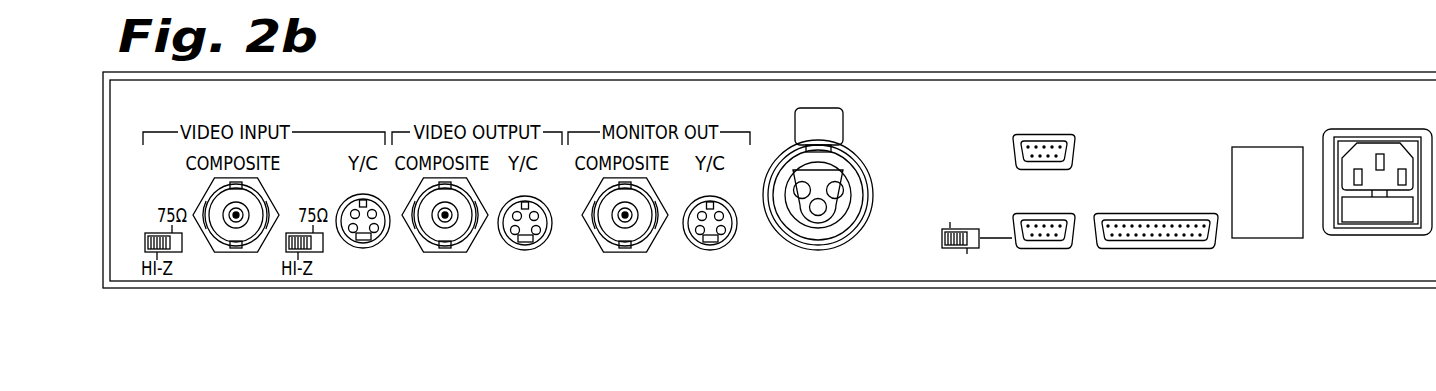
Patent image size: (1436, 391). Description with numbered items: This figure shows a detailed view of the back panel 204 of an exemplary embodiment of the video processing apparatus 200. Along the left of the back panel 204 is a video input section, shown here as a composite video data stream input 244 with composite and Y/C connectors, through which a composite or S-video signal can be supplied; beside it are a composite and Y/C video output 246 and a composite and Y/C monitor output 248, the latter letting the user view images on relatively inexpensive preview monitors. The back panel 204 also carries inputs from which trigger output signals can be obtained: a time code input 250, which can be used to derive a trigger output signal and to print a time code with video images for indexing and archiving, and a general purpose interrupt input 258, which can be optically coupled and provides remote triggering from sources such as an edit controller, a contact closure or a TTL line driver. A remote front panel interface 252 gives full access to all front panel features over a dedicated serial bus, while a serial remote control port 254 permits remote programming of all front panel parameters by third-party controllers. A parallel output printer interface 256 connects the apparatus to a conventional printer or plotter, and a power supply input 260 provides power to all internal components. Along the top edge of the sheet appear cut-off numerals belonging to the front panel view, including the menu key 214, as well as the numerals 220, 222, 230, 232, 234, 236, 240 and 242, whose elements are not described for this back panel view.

The video processing apparatus 200 is at (1373, 70).
The back panel 204 is at (963, 110).
The composite video data stream input 244 is at (236, 248).
The composite and Y/C video output 246 is at (445, 248).
The composite and Y/C monitor output 248 is at (625, 248).
The time code input 250 is at (796, 222).
The remote front panel interface 252 is at (1048, 135).
The RS-422/RS-232 remote control port 254 is at (1046, 248).
The parallel output printer interface 256 is at (1157, 248).
The general purpose interrupt input 258 is at (1268, 238).
The power supply input 260 is at (1379, 222).
The menu key 214 is at (522, 5).
The front panel element 220 is at (617, 10).
The front panel element 222 is at (730, 10).
The front panel element 230 is at (853, 10).
The front panel element 232 is at (933, 10).
The front panel element 234 is at (1040, 10).
The front panel element 236 is at (1160, 10).
The front panel element 240 is at (1278, 10).
The front panel element 242 is at (1395, 10).